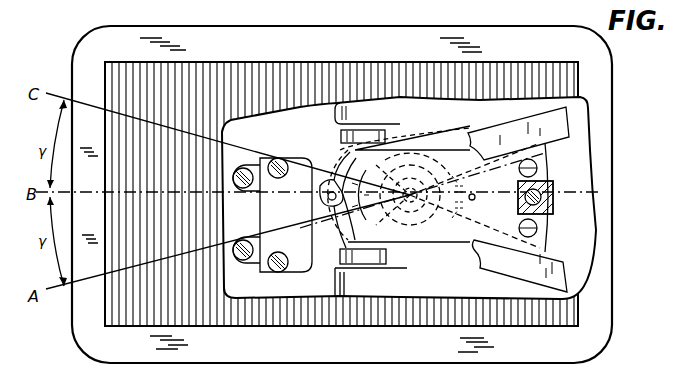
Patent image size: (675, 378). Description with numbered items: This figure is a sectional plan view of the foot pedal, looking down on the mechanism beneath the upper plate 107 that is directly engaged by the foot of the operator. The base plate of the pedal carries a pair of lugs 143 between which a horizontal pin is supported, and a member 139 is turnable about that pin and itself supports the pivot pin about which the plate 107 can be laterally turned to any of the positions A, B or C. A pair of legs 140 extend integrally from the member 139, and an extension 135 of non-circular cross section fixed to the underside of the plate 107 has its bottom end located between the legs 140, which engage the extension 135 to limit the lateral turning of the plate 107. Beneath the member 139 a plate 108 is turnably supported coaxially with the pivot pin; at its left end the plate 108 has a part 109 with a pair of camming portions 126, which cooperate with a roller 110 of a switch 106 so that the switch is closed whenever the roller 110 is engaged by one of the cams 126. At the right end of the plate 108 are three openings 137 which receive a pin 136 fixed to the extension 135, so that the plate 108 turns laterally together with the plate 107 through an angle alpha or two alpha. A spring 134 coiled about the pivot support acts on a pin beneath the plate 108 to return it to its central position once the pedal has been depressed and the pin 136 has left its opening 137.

The switch 106 is at (266, 202).
The upper plate 107 is at (598, 263).
The plate 108 is at (547, 172).
The part 109 is at (330, 233).
The roller 110 is at (318, 210).
The camming portions 126 is at (326, 168).
The spring 134 is at (480, 242).
The extension 135 is at (554, 200).
The pin 136 is at (476, 202).
The openings 137 is at (536, 164).
The member 139 is at (364, 138).
The legs 140 is at (562, 122).
The lugs 143 is at (372, 112).